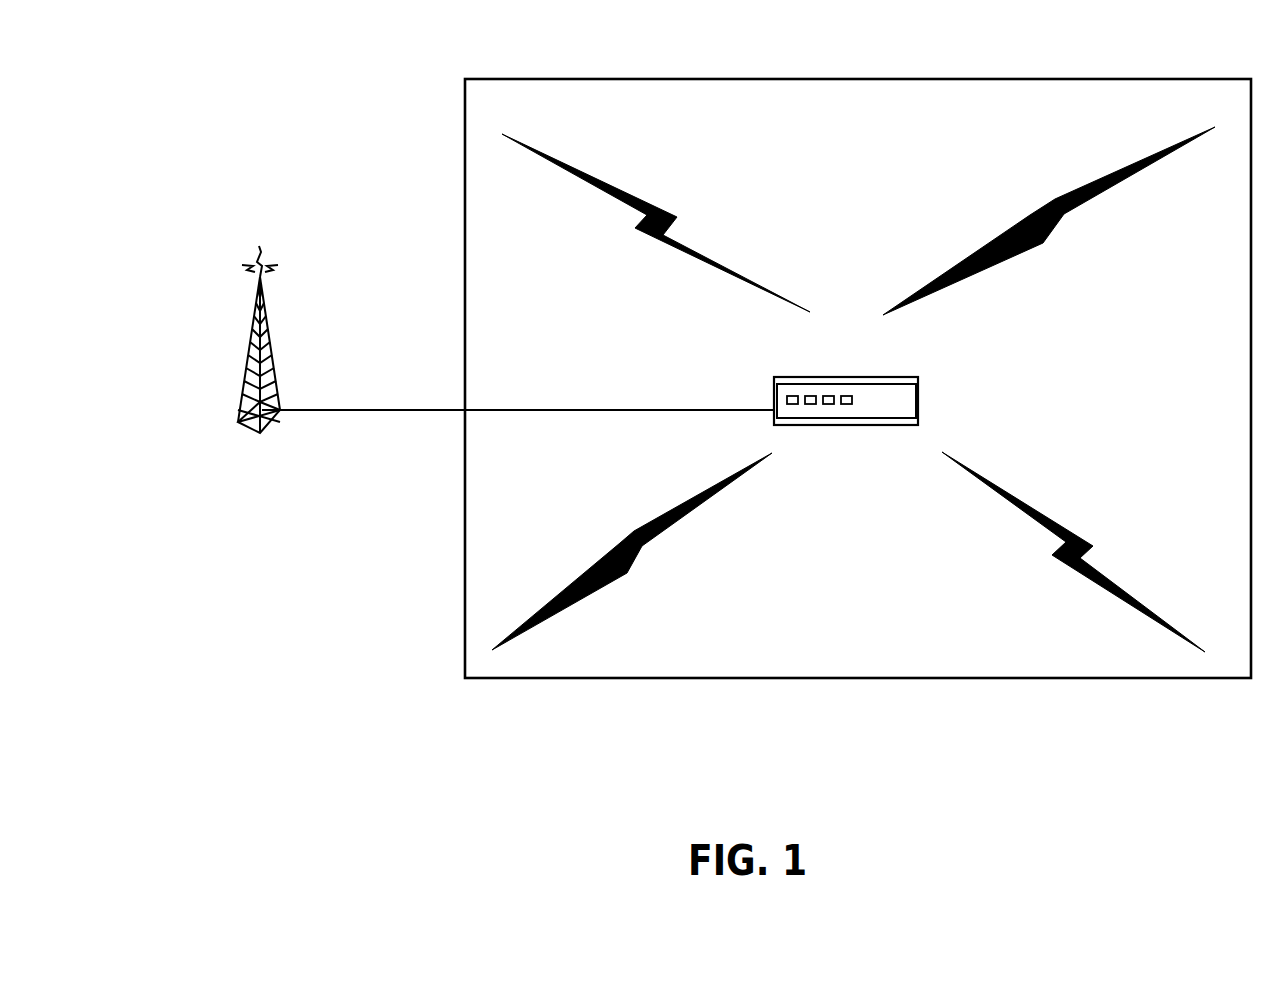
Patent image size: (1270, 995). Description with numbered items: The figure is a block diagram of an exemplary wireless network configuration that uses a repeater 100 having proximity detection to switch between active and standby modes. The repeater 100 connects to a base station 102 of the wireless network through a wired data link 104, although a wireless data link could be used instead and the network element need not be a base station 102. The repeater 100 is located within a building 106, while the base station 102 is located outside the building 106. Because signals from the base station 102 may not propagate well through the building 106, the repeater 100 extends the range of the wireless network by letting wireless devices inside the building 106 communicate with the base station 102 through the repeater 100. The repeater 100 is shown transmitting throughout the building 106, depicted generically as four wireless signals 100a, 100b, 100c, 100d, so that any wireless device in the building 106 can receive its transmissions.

The repeater 100 is at (918, 390).
The wireless signal 100a is at (662, 210).
The wireless signal 100b is at (1033, 215).
The wireless signal 100c is at (623, 537).
The wireless signal 100d is at (1082, 539).
The base station 102 is at (266, 320).
The wired data link 104 is at (657, 411).
The building 106 is at (465, 115).